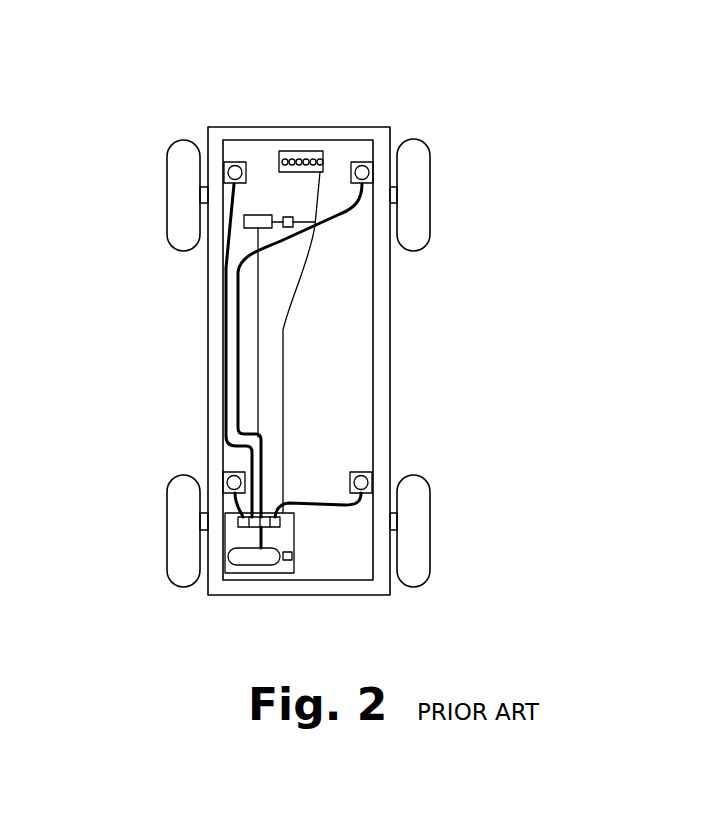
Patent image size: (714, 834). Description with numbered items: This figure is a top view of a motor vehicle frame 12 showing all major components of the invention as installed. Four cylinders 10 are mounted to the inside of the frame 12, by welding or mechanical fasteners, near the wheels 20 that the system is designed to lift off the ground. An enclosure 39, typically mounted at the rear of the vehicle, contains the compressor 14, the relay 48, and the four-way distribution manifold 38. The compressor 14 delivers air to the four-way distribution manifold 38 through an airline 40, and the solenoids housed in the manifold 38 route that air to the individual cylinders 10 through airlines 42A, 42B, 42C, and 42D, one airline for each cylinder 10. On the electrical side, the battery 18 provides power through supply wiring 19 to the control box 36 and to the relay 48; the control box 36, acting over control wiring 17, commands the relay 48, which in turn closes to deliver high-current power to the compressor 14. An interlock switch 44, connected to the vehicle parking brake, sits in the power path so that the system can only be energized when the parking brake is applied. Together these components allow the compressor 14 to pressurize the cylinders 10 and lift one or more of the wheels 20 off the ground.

The cylinder 10 is at (232, 167).
The motor vehicle frame 12 is at (390, 357).
The compressor 14 is at (250, 558).
The control wiring 17 is at (257, 332).
The battery 18 is at (308, 151).
The supply wiring 19 is at (293, 300).
The wheel 20 is at (180, 210).
The control box 36 is at (255, 215).
The 4-way distribution manifold 38 is at (280, 523).
The enclosure 39 is at (297, 560).
The airline 40 is at (260, 540).
The airline 42A is at (225, 428).
The airline 42B is at (350, 208).
The airline 42C is at (237, 507).
The airline 42D is at (347, 507).
The interlock switch 44 is at (283, 216).
The relay 48 is at (286, 561).